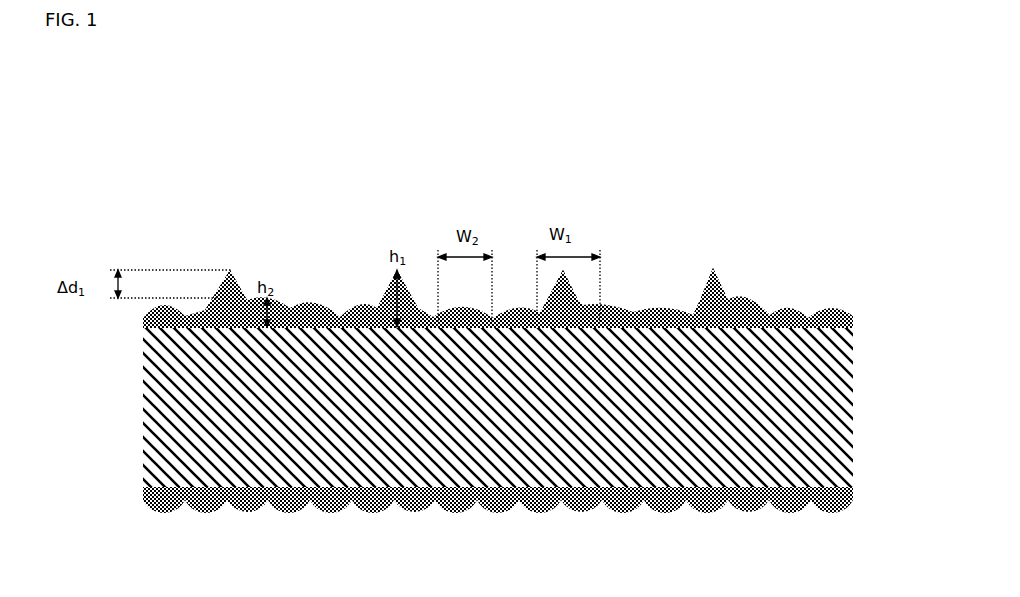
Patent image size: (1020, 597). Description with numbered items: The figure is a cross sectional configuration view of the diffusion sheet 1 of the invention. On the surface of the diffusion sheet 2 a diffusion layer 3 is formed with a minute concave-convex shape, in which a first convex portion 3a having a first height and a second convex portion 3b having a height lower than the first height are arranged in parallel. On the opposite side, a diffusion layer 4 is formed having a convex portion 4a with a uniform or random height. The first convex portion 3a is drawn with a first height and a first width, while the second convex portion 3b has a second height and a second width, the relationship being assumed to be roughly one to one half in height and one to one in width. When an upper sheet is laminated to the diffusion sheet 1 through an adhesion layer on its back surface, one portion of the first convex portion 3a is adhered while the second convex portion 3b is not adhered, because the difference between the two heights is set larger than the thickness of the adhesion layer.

The diffusion sheet 1 is at (538, 320).
The surface of the diffusion sheet 2 is at (887, 335).
The diffusion layer 3 is at (538, 260).
The first convex portion 3a is at (217, 295).
The second convex portion 3b is at (283, 300).
The diffusion layer 4 is at (541, 531).
The convex portion 4a is at (435, 513).